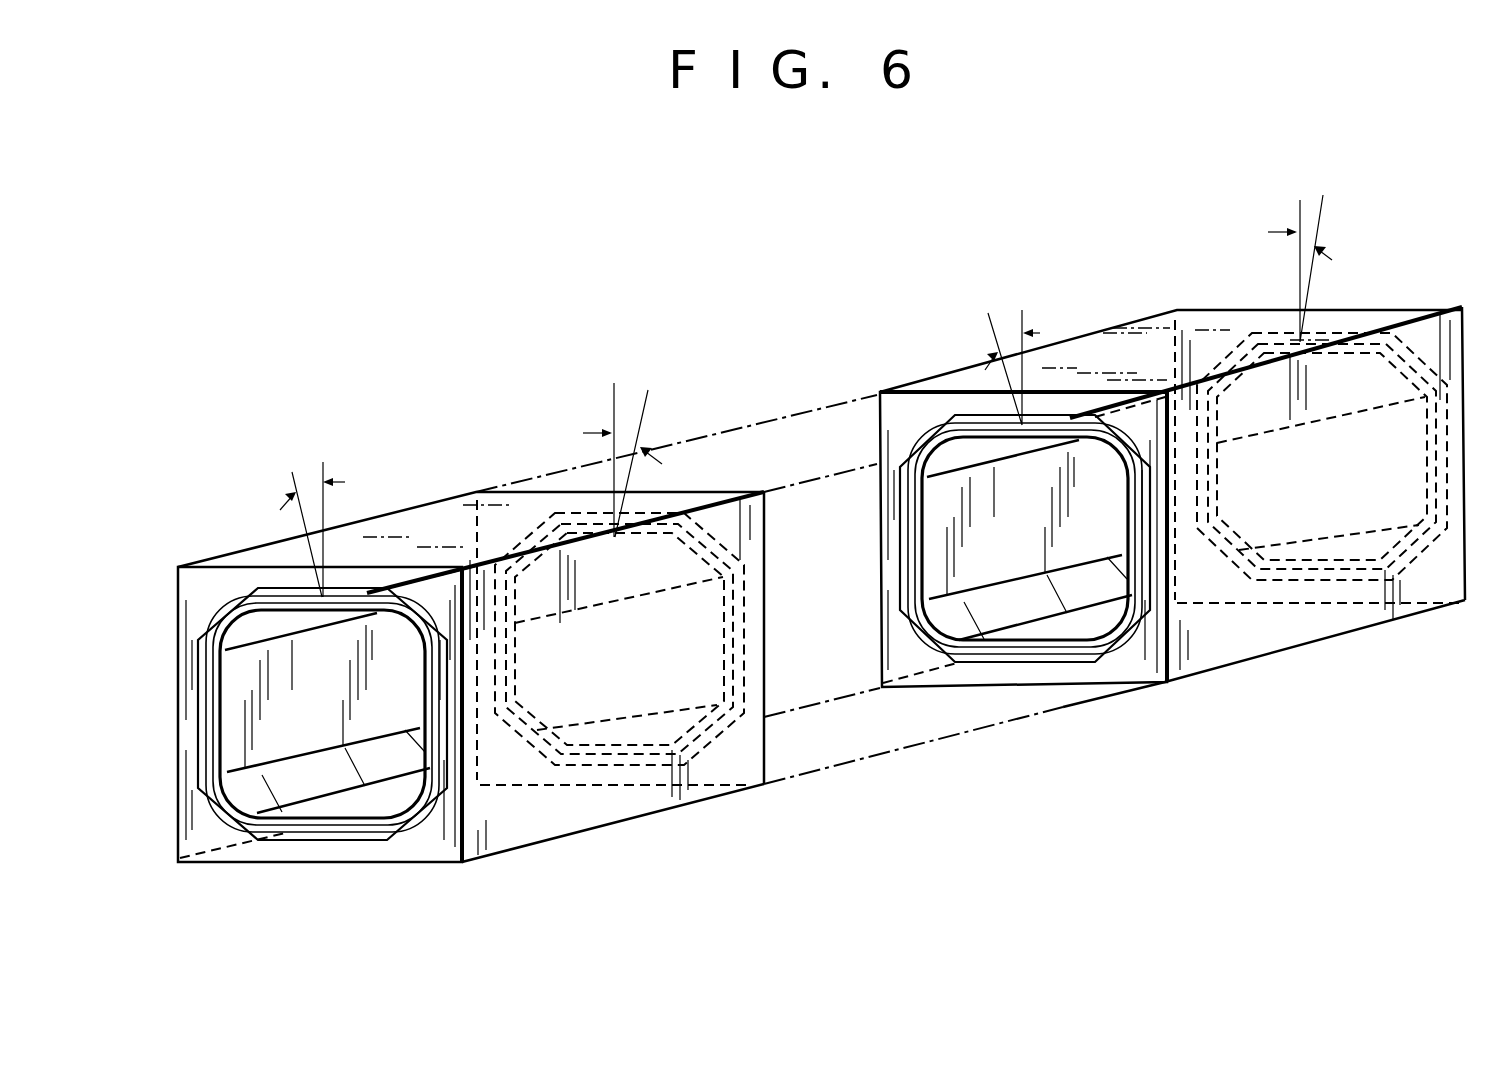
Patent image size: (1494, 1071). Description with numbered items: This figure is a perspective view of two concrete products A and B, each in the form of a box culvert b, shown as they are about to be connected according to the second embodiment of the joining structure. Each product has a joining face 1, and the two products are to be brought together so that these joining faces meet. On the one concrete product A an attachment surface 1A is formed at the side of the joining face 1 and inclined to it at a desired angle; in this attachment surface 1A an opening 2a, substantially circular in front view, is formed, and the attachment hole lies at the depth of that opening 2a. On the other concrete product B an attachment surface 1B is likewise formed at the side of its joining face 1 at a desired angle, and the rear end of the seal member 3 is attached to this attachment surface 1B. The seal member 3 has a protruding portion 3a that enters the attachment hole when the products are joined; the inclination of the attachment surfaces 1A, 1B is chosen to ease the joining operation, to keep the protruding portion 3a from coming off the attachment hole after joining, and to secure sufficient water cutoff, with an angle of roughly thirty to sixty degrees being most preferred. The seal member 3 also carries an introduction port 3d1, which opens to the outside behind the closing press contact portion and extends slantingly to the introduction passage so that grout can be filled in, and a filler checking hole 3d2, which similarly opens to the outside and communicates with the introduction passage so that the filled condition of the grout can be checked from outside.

The joining face 1 is at (228, 555).
The attachment surface 1A is at (745, 657).
The attachment surface 1B is at (262, 580).
The opening 2a is at (652, 533).
The seal member 3 is at (373, 597).
The protruding portion 3a is at (338, 598).
The introduction port 3d1 is at (313, 823).
The filler checking hole 3d2 is at (433, 720).
The concrete product A is at (420, 527).
The concrete product B is at (1128, 340).
The box culvert b is at (447, 520).